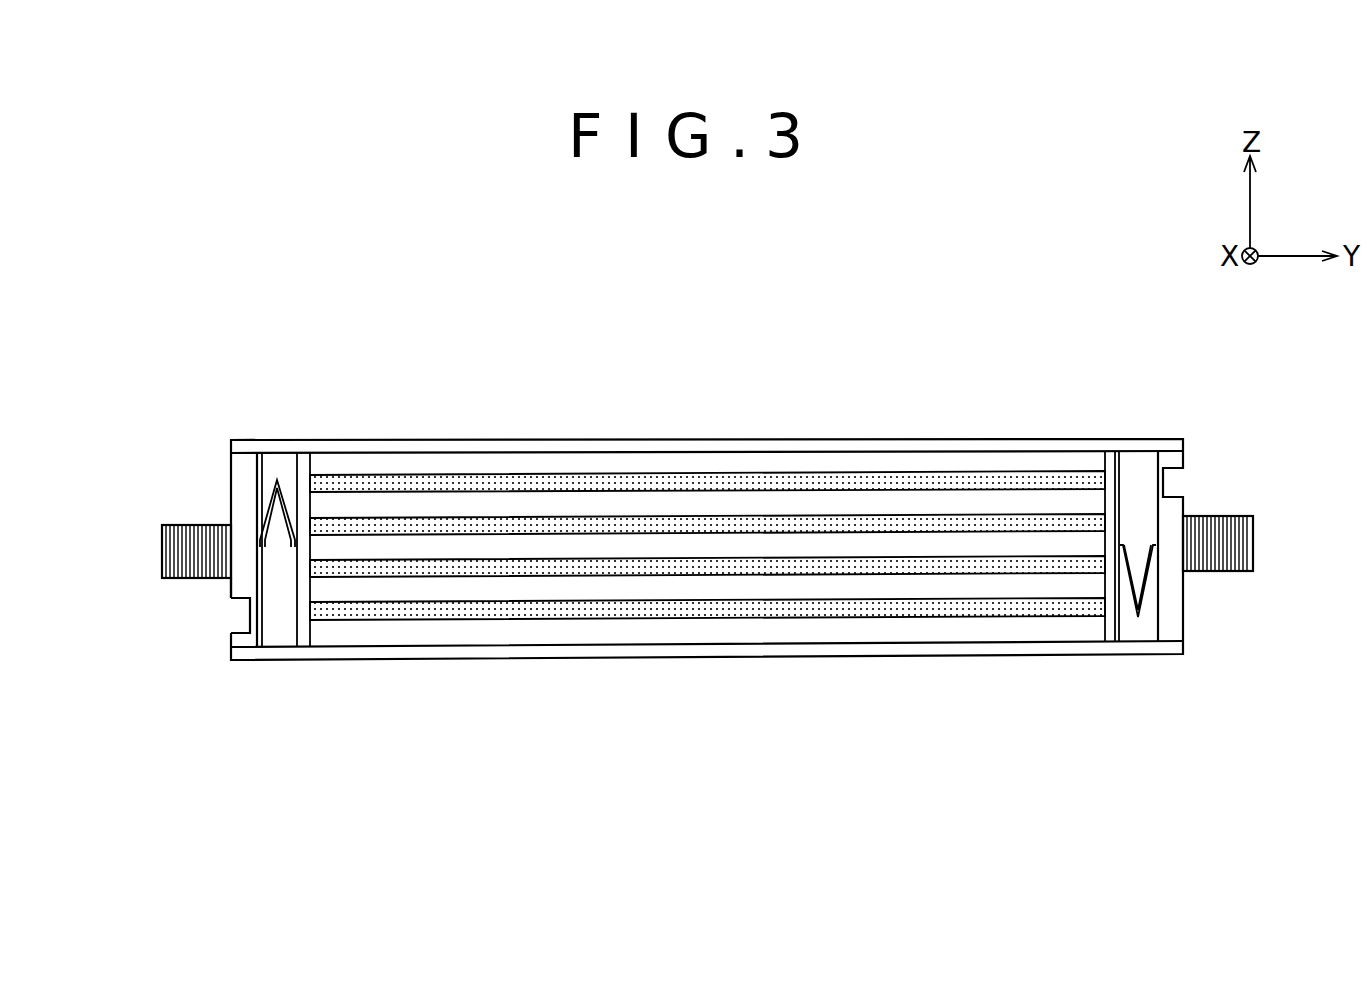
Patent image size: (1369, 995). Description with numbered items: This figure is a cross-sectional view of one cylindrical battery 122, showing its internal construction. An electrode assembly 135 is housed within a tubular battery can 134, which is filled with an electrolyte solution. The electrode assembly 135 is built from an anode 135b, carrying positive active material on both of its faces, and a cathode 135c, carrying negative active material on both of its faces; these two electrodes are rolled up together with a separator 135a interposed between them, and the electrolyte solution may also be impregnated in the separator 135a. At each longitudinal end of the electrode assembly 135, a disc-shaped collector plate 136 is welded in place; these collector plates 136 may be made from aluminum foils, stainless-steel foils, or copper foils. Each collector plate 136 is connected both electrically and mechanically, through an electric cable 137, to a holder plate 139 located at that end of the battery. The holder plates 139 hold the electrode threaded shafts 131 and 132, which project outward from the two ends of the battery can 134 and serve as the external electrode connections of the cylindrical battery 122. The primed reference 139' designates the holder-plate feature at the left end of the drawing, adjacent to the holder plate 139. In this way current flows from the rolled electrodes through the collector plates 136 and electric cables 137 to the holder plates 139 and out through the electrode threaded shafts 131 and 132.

The cylindrical battery 122 is at (718, 348).
The electrode threaded shaft 131 is at (198, 522).
The electrode threaded shaft 132 is at (1222, 572).
The tubular battery can 134 is at (550, 438).
The electrode assembly 135 is at (989, 326).
The separator 135a is at (960, 500).
The anode 135b is at (876, 525).
The cathode 135c is at (1020, 478).
The collector plate 136 is at (305, 632).
The electric cable 137 is at (265, 488).
The holder plate 139 is at (177, 608).
The notch 139' is at (183, 653).